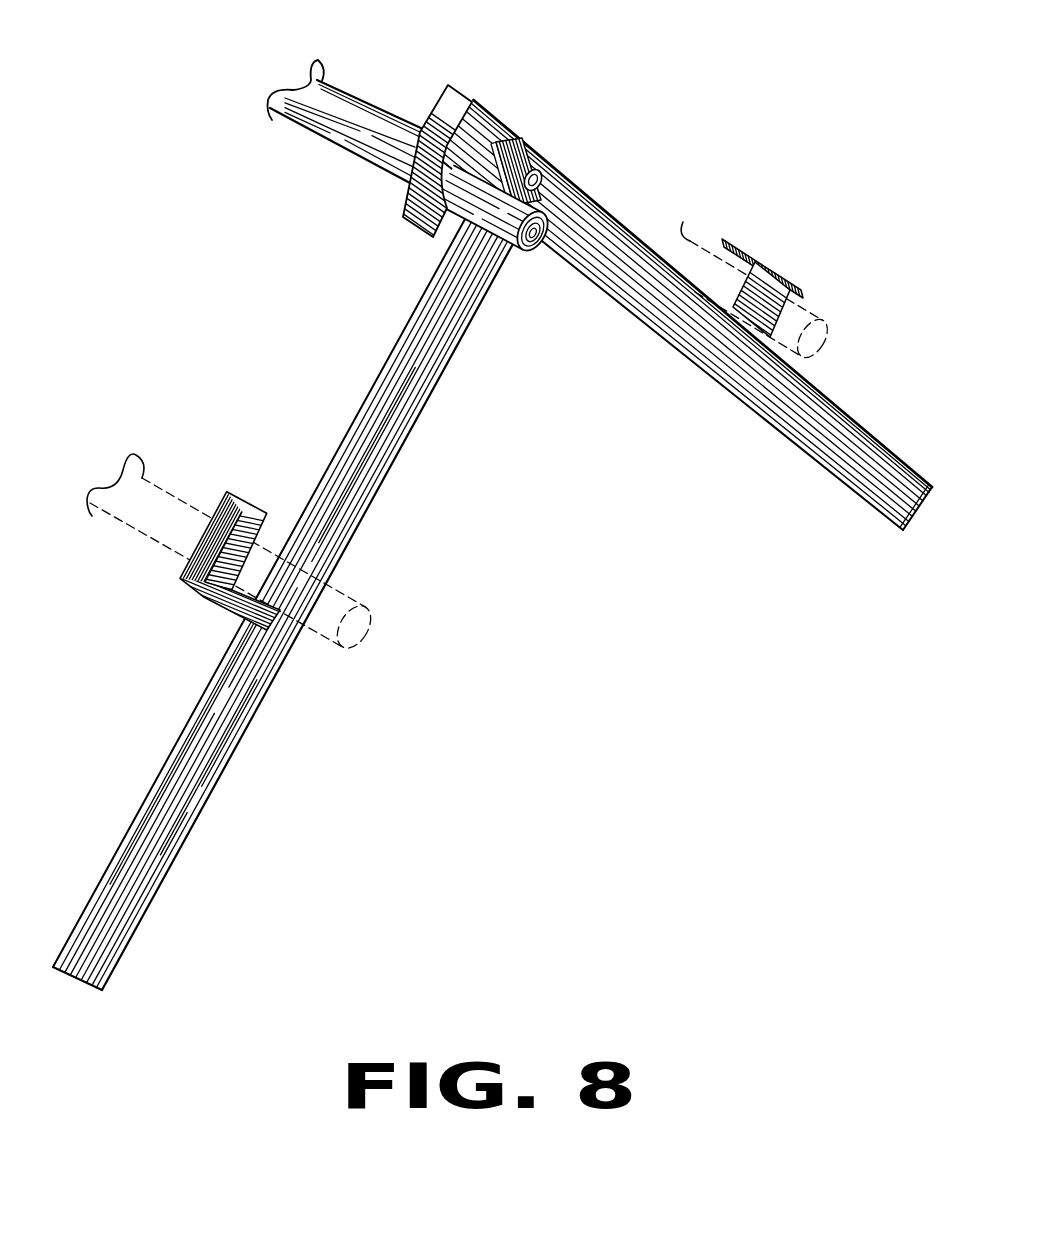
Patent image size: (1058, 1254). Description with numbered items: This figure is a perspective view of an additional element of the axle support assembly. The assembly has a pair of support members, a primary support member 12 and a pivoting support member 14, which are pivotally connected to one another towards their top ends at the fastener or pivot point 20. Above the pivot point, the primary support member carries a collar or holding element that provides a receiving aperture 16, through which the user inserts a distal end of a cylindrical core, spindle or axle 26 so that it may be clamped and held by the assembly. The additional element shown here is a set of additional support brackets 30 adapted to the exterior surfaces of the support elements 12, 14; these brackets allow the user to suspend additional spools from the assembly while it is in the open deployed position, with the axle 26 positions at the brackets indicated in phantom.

The primary support member 12 is at (625, 235).
The pivoting support member 14 is at (200, 737).
The receiving aperture 16 is at (460, 93).
The fastener or pivot point 20 is at (546, 166).
The cylindrical core, spindle or axle 26 is at (327, 127).
The additional support brackets 30 is at (232, 588).